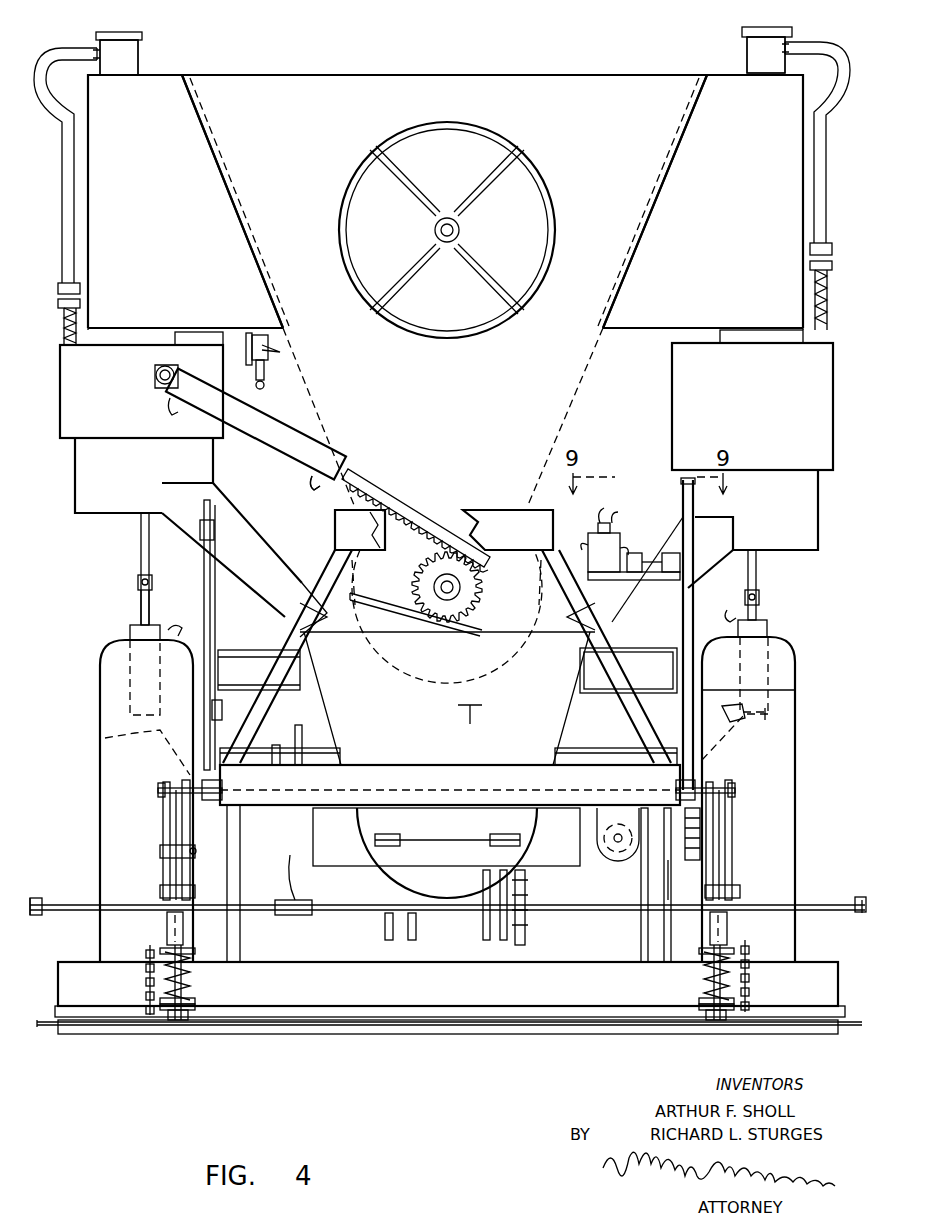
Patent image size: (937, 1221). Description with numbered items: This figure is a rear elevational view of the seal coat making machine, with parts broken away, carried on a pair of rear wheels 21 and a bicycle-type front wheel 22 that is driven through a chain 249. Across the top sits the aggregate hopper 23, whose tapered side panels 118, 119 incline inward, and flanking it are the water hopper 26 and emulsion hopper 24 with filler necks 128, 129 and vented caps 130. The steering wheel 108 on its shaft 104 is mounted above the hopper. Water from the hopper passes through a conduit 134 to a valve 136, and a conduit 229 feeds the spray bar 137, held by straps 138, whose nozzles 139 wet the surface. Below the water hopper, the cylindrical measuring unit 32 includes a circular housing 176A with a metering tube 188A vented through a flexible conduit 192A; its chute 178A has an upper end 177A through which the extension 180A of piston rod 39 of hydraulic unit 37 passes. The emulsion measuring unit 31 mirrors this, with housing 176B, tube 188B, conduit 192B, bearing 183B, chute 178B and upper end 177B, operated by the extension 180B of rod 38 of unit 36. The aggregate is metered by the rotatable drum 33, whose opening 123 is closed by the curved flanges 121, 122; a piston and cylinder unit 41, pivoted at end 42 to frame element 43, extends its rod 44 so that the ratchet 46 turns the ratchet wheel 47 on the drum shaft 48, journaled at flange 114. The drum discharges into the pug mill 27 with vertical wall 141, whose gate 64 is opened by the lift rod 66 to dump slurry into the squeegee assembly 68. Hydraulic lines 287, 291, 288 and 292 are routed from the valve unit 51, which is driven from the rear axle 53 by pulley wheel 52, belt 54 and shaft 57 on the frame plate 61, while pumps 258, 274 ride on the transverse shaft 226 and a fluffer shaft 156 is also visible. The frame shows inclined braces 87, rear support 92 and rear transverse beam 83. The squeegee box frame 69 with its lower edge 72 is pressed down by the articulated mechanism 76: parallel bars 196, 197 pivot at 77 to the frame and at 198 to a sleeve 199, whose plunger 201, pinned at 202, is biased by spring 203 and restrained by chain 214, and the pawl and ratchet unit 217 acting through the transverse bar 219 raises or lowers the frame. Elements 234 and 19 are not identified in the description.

The first hopper 23 is at (568, 93).
The third hopper 26 is at (148, 86).
The second hopper 24 is at (726, 87).
The side panel 118 is at (258, 265).
The side panel 119 is at (633, 262).
The vented cap 130 is at (133, 22).
The filler neck 128 is at (142, 52).
The filler neck 129 is at (745, 55).
The flexible conduit 192A is at (72, 185).
The flexible conduit 192B is at (815, 148).
The tube 188A is at (78, 318).
The tube 188B is at (814, 322).
The steering wheel 108 is at (555, 208).
The shaft 104 is at (449, 220).
The valve 136 is at (270, 348).
The conduit 134 is at (280, 372).
The circular housing 176A is at (60, 432).
The upper end of chute 177A is at (100, 513).
The chute 178A is at (258, 503).
The cylindrical measuring unit 32 is at (64, 492).
The extension 180A is at (140, 560).
The pawl and ratchet unit 217 is at (199, 574).
The piston rod 39 is at (140, 605).
The hydraulic piston and cylinder unit 37 is at (130, 632).
The line 287 is at (170, 415).
The frame element 43 is at (148, 356).
The pivot end 42 is at (163, 388).
The piston and cylinder unit 41 is at (280, 438).
The line 291 is at (318, 482).
The rod 44 is at (362, 487).
The ratchet 46 is at (408, 525).
The ratchet wheel 47 is at (410, 578).
The shaft 48 is at (453, 587).
The rear support 92 is at (340, 514).
The drum opening 123 is at (500, 545).
The inclined braces 87 is at (328, 553).
The lower flange 114 is at (395, 598).
The rotatable drum 33 is at (417, 672).
The lower flange 121 is at (337, 612).
The lower flange 122 is at (541, 615).
The vertical wall 141 is at (379, 718).
The lift rod 66 is at (468, 731).
The circular housing 176B is at (672, 392).
The bearing 183B is at (720, 336).
The upper end of chute 177B is at (756, 510).
The cylindrical measuring unit 31 is at (826, 473).
The chute 178B is at (742, 573).
The shaft 156 is at (683, 490).
The valve unit 51 is at (618, 524).
The shaft 57 is at (640, 545).
The frame-mounted plate 61 is at (650, 580).
The extension 180B is at (758, 588).
The piston rod 38 is at (760, 612).
The hydraulic piston and cylinder unit 36 is at (770, 630).
The line 292 is at (720, 638).
The rear wheels 21 is at (108, 790).
The belt 54 is at (760, 690).
The line 288 is at (775, 720).
The left bearing box 234 is at (255, 651).
The fluid pump 258 is at (677, 655).
The pump 274 is at (448, 730).
The transverse shaft 226 is at (318, 746).
The bar 219 is at (450, 785).
The transverse beam 83 is at (515, 775).
The pivot connection 77 is at (160, 793).
The parallel bar 196 is at (165, 812).
The parallel bar 197 is at (185, 823).
The articulated mechanism 76 is at (128, 845).
The pulley 19 is at (160, 855).
The pivot connection 198 is at (162, 890).
The sleeve 199 is at (166, 921).
The rear wheel axle 53 is at (700, 830).
The pulley wheel 52 is at (685, 862).
The spray bar 137 is at (82, 905).
The nozzles 139 is at (40, 915).
The conduit 229 is at (298, 856).
The pug mill 27 is at (367, 830).
The gate 64 is at (400, 870).
The straps 138 is at (643, 880).
The chain 249 is at (528, 945).
The front wheel 22 is at (440, 950).
The lower edge 72 is at (238, 1036).
The box frame 69 is at (315, 1005).
The squeegee assembly 68 is at (124, 1064).
The spring 203 is at (190, 970).
The plunger 201 is at (186, 990).
The pin 202 is at (165, 1020).
The chain 214 is at (146, 991).